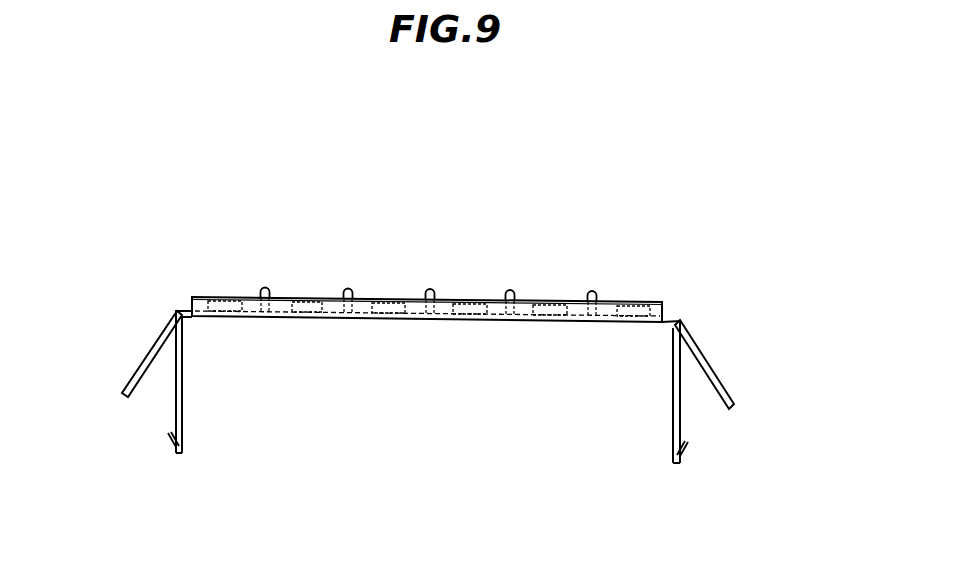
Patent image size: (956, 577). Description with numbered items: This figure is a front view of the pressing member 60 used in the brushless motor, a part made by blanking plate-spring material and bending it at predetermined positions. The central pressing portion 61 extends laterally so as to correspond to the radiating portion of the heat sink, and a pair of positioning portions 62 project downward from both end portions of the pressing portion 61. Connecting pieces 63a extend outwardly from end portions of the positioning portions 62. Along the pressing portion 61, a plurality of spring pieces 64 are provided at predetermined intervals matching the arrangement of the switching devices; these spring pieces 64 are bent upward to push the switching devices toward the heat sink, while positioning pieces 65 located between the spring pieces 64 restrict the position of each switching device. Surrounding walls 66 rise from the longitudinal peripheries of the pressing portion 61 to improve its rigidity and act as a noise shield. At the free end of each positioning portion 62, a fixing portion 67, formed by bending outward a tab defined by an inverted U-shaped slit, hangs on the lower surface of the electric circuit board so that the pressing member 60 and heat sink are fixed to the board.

The pressing member 60 is at (710, 187).
The pressing portion 61 is at (671, 320).
The positioning portion 62 is at (183, 390).
The connecting piece 63a is at (152, 350).
The spring piece 64 is at (222, 297).
The positioning piece 65 is at (347, 290).
The surrounding wall 66 is at (201, 297).
The fixing portion 67 is at (152, 459).